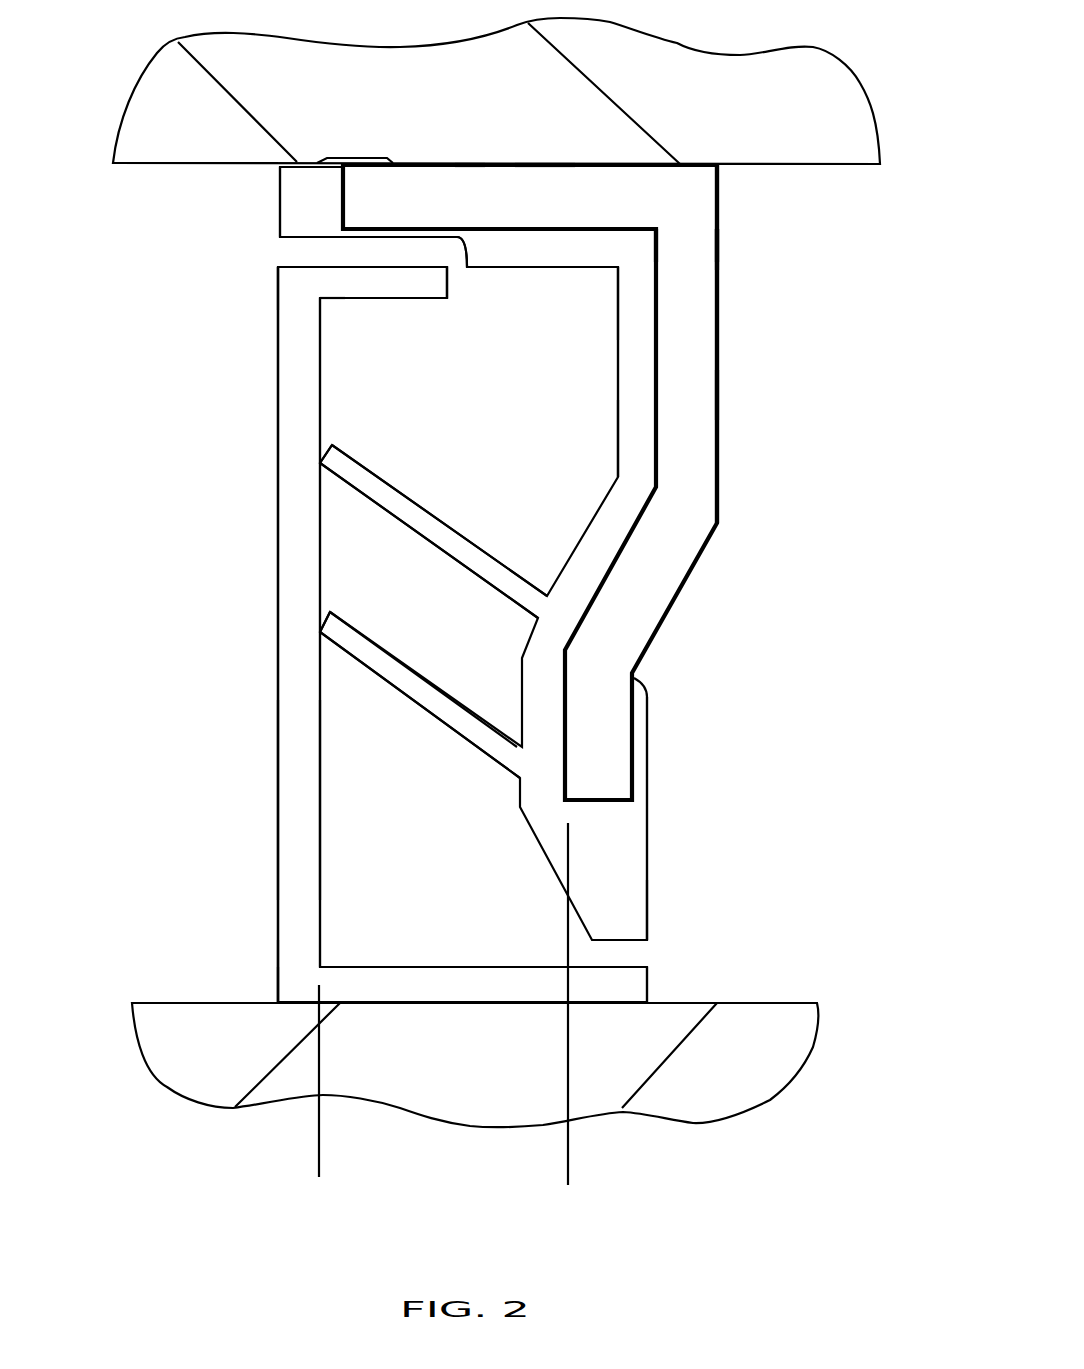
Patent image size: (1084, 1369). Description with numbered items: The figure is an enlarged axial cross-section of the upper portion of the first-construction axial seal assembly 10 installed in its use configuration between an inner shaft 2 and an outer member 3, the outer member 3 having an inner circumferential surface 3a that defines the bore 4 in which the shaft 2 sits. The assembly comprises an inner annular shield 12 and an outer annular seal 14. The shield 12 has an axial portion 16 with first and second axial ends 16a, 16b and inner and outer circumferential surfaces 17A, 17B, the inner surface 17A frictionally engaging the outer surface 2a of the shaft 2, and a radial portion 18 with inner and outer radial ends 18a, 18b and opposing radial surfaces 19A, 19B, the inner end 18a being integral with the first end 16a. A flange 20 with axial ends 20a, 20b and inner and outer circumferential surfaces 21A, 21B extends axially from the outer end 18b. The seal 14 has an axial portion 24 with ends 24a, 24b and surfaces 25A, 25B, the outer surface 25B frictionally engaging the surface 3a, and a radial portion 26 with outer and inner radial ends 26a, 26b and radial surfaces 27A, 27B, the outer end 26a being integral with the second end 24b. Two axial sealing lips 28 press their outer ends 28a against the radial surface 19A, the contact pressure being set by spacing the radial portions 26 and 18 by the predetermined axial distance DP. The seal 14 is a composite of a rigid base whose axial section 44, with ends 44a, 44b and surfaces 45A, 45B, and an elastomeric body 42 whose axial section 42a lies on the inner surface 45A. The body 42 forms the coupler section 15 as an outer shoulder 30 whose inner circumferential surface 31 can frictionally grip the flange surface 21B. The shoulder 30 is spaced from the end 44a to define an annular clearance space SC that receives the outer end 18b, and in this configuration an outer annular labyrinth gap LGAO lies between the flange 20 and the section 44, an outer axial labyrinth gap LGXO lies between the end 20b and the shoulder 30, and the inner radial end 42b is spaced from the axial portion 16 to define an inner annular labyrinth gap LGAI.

The inner shaft 2 is at (831, 1028).
The outer surface of the shaft 2a is at (797, 1000).
The outer member 3 is at (886, 118).
The inner circumferential surface of the outer member 3a is at (845, 167).
The bore 4 is at (165, 335).
The axial seal assembly 10 is at (136, 516).
The inner annular shield 12 is at (256, 594).
The outer annular seal 14 is at (759, 523).
The coupler section 15 is at (540, 279).
The shield axial portion 16 is at (482, 1009).
The first axial end of the shield axial portion 16a is at (282, 969).
The second axial end of the shield axial portion 16b is at (637, 985).
The inner circumferential surface of the shield axial portion 17A is at (412, 1007).
The outer circumferential surface of the shield axial portion 17B is at (438, 967).
The shield radial portion 18 is at (275, 716).
The inner radial end of the shield radial portion 18a is at (290, 940).
The outer radial end of the shield radial portion 18b is at (290, 292).
The radial surface of the shield radial portion 19A is at (322, 793).
The opposing radial surface of the shield radial portion 19B is at (276, 785).
The flange 20 is at (407, 329).
The axial end of the flange 20a is at (318, 288).
The axial end of the flange 20b is at (437, 293).
The inner circumferential surface of the flange 21A is at (375, 298).
The outer circumferential surface of the flange 21B is at (380, 265).
The seal axial portion 24 is at (497, 157).
The first axial end of the seal axial portion 24a is at (278, 201).
The second axial end of the seal axial portion 24b is at (721, 203).
The inner circumferential surface of the seal axial portion 25A is at (580, 279).
The outer circumferential surface of the seal axial portion 25B is at (558, 161).
The seal radial portion 26 is at (724, 433).
The outer radial end of the seal radial portion 26a is at (721, 248).
The inner radial end of the seal radial portion 26b is at (640, 925).
The radial surface of the seal radial portion 27A is at (616, 442).
The opposing radial surface of the seal radial portion 27B is at (724, 400).
The axial sealing lip 28 is at (429, 517).
The outer end of the axial sealing lip 28a is at (340, 458).
The outer shoulder 30 is at (553, 234).
The inner circumferential surface of the shoulder 31 is at (502, 276).
The elastomeric body 42 is at (611, 412).
The axial section of the elastomeric body 42a is at (598, 242).
The inner radial end of the elastomeric body 42b is at (617, 913).
The axial section of the rigid base 44 is at (593, 168).
The first axial end of the base axial section 44a is at (355, 175).
The second axial end of the base axial section 44b is at (690, 182).
The inner circumferential surface of the base axial section 45A is at (523, 225).
The outer circumferential surface of the base axial section 45B is at (467, 162).
The annular clearance space SC is at (293, 249).
The outer annular labyrinth gap LGAO is at (413, 250).
The outer axial labyrinth gap LGXO is at (457, 271).
The inner annular labyrinth gap LGAI is at (623, 955).
The predetermined axial distance DP is at (563, 1158).